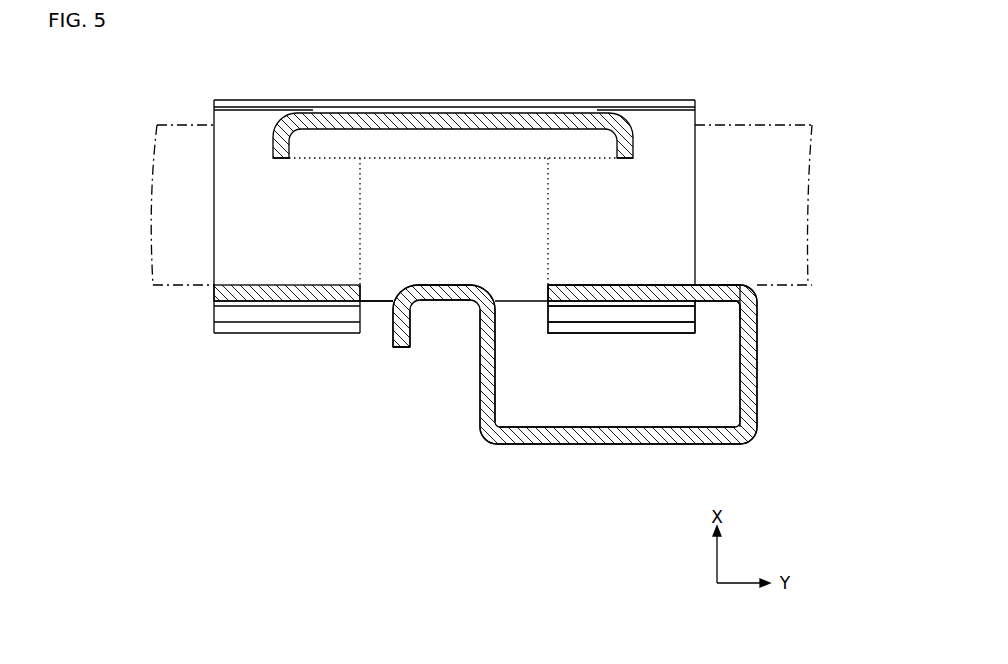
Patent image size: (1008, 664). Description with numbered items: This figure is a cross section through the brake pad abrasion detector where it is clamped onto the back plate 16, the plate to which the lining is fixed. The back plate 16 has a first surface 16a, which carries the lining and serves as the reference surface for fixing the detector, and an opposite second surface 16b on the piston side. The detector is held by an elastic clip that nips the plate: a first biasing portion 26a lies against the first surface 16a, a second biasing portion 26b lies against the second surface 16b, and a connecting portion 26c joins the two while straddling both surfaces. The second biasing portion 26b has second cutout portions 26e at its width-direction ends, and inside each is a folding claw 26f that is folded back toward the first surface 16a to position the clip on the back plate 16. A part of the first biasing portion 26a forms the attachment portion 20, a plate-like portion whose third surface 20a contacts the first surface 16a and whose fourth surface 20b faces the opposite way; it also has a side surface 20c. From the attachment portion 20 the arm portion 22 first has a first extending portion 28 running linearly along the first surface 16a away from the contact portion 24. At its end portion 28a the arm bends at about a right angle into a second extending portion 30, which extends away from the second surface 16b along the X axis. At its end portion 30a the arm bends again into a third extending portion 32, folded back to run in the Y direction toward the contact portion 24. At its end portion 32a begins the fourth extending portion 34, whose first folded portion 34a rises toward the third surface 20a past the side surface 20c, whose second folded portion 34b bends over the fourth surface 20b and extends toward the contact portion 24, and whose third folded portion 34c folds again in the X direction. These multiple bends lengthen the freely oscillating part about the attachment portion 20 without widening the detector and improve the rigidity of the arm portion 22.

The back plate 16 is at (163, 183).
The first surface 16a is at (178, 287).
The second surface 16b is at (181, 123).
The attachment portion 20 is at (668, 292).
The third surface 20a is at (578, 284).
The fourth surface 20b is at (594, 303).
The side surface 20c is at (545, 297).
The arm portion 22 is at (588, 445).
The contact portion 24 is at (402, 349).
The first biasing portion 26a is at (249, 293).
The second biasing portion 26b is at (347, 125).
The connecting portion 26c is at (223, 217).
The second cutout portion 26e is at (247, 111).
The folding claw 26f is at (633, 160).
The first extending portion 28 is at (745, 287).
The end portion of first extending portion 28a is at (733, 304).
The second extending portion 30 is at (755, 382).
The end portion of second extending portion 30a is at (746, 442).
The third extending portion 32 is at (527, 445).
The end portion of third extending portion 32a is at (487, 436).
The fourth extending portion 34 is at (441, 303).
The first folded portion 34a is at (480, 325).
The second folded portion 34b is at (425, 302).
The third folded portion 34c is at (396, 312).